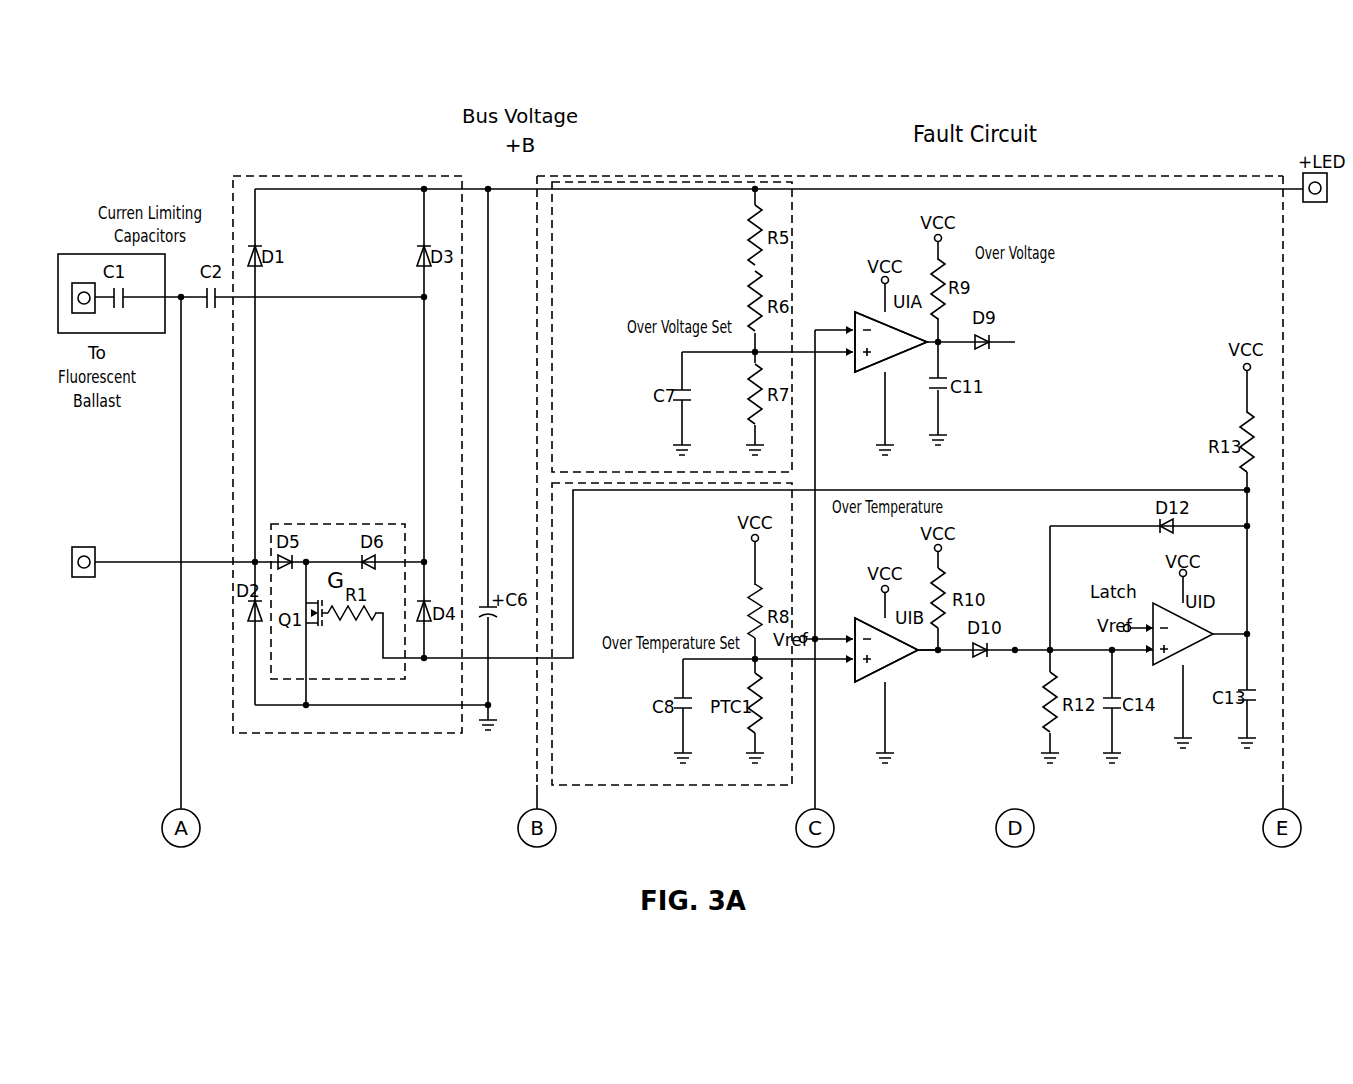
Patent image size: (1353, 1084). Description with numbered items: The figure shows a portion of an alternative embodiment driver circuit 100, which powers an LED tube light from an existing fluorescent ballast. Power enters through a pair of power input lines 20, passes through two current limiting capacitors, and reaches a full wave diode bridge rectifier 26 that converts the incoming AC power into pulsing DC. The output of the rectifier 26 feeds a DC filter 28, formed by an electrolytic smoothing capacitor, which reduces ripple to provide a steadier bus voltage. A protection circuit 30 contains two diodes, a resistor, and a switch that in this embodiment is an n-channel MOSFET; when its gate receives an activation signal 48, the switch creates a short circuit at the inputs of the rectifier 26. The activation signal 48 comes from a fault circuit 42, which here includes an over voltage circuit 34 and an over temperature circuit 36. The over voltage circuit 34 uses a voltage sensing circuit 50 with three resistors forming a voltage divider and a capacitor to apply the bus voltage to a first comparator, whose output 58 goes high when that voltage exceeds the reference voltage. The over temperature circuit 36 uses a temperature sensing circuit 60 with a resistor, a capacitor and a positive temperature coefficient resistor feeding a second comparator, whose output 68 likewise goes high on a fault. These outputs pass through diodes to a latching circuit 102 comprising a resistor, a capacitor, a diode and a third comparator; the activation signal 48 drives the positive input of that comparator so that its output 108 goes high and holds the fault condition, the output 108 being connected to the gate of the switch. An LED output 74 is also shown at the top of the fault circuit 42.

The power input lines 20 is at (84, 283).
The rectifier 26 is at (420, 176).
The DC filter 28 is at (503, 580).
The protection circuit 30 is at (368, 524).
The over voltage circuit 34 is at (1019, 310).
The over temperature circuit 36 is at (960, 518).
The fault circuit 42 is at (893, 174).
The activation signal 48 is at (1238, 630).
The voltage sensing circuit 50 is at (795, 235).
The output of the comparator U1A 58 is at (923, 343).
The temperature sensing circuit 60 is at (758, 786).
The output of the comparator U1B 68 is at (922, 652).
The output 74 is at (1315, 203).
The driver circuit 100 is at (1084, 131).
The latching circuit 102 is at (1158, 463).
The output of the comparator U1D 108 is at (1218, 630).